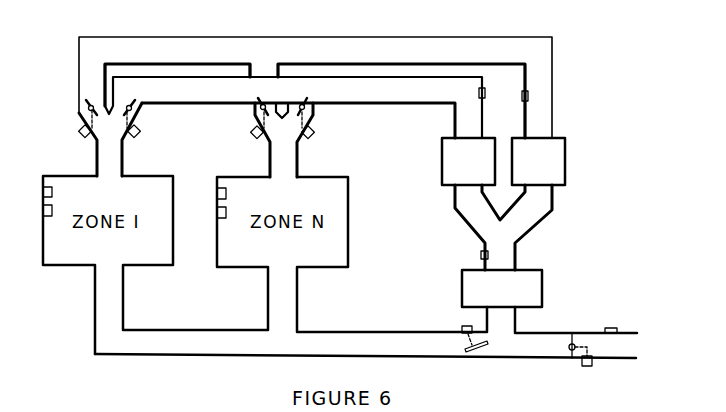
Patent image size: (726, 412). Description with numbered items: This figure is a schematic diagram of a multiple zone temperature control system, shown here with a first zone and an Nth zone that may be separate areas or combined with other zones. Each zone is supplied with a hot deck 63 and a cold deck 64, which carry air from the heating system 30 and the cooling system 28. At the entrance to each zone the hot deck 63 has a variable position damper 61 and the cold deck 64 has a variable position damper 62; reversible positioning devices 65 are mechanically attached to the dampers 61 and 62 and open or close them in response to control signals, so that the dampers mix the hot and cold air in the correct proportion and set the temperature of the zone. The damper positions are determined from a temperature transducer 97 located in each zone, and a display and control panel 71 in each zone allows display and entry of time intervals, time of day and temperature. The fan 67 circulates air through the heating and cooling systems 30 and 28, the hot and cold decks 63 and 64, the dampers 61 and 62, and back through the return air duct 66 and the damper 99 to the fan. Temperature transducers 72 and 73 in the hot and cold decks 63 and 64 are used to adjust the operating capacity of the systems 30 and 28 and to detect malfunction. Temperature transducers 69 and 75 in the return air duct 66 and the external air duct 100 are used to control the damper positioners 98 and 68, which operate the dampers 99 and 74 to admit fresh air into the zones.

The cooling system 28 is at (566, 170).
The heating system 30 is at (441, 166).
The variable position damper 61 is at (135, 115).
The variable position damper 62 is at (85, 113).
The hot deck 63 is at (416, 104).
The cold deck 64 is at (555, 83).
The reversible positioning device 65 is at (82, 138).
The return air duct 66 is at (301, 331).
The fan 67 is at (461, 286).
The damper positioner 68 is at (592, 364).
The temperature transducer 69 is at (480, 252).
The display and control panel 71 is at (42, 210).
The temperature transducer 72 is at (486, 93).
The temperature transducer 73 is at (521, 97).
The damper 74 is at (571, 340).
The temperature transducer 75 is at (614, 327).
The temperature transducer 97 is at (42, 191).
The damper positioner 98 is at (462, 328).
The damper 99 is at (478, 350).
The external air duct 100 is at (632, 355).